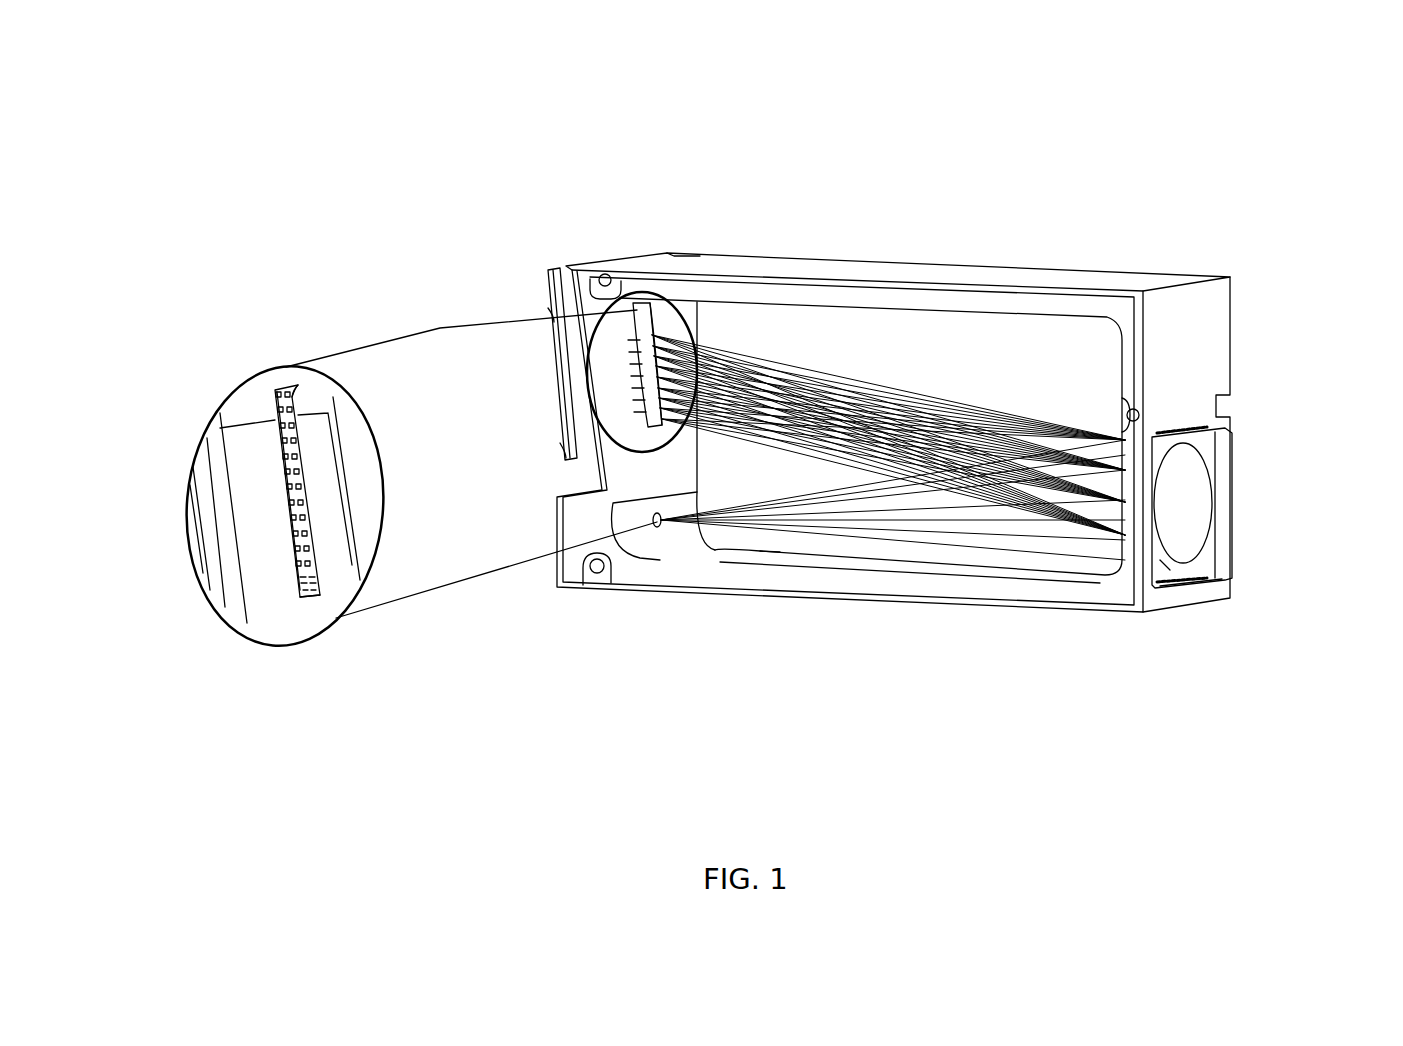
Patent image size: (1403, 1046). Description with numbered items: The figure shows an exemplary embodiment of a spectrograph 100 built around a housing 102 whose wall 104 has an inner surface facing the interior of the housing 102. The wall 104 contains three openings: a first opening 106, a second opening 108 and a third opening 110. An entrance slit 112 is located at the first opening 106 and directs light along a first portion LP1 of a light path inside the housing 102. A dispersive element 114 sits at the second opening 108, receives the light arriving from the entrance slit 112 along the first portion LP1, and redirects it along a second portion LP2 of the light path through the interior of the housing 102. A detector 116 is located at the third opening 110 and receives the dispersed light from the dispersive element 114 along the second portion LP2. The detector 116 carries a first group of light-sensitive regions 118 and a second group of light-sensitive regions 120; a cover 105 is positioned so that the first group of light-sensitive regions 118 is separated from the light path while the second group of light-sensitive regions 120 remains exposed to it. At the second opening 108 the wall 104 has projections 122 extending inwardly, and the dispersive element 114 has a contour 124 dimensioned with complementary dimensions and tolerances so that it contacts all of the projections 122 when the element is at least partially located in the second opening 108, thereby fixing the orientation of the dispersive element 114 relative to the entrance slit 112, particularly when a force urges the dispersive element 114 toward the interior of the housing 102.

The spectrograph 100 is at (323, 100).
The housing 102 is at (893, 265).
The wall 104 is at (778, 558).
The cover 105 is at (323, 594).
The first opening 106 is at (657, 525).
The second opening 108 is at (1230, 432).
The third opening 110 is at (548, 300).
The entrance slit 112 is at (573, 578).
The dispersive element 114 is at (1223, 532).
The detector 116 is at (633, 307).
The first group of light-sensitive regions 118 is at (315, 593).
The second group of light-sensitive regions 120 is at (268, 415).
The projections 122 is at (1208, 577).
The contour 124 is at (1167, 563).
The first portion of light path LP1 is at (893, 518).
The second portion of light path LP2 is at (932, 440).